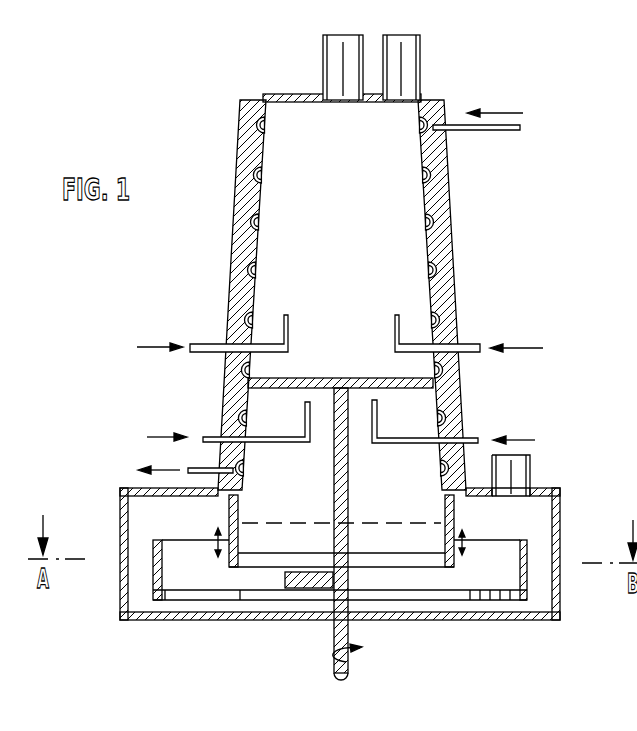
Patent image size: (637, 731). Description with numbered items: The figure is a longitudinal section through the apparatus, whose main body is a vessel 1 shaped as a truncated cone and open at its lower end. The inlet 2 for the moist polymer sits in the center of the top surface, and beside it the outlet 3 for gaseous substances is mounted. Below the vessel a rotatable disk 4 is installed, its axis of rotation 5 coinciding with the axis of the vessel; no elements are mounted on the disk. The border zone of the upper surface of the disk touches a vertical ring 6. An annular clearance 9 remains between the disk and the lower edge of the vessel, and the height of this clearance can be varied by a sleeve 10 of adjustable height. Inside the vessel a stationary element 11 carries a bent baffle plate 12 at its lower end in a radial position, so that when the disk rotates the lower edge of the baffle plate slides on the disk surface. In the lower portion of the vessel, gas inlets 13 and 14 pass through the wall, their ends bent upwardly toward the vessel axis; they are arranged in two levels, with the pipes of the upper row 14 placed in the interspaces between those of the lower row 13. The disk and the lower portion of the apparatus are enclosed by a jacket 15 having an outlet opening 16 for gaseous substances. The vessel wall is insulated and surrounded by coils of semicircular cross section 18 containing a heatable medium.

The vessel 1 is at (282, 98).
The inlet 2 is at (322, 60).
The outlet 3 is at (421, 68).
The rotatable disk 4 is at (437, 597).
The axis of rotation 5 is at (348, 639).
The vertical ring 6 is at (527, 574).
The annular clearance 9 is at (448, 578).
The sleeve 10 is at (230, 545).
The stationary element 11 is at (434, 385).
The bent baffle plate 12 is at (307, 582).
The gas inlets 13 is at (212, 437).
The gas inlets 14 is at (202, 344).
The jacket 15 is at (120, 590).
The outlet opening 16 is at (531, 474).
The coils of semicircular cross section 18 is at (253, 222).